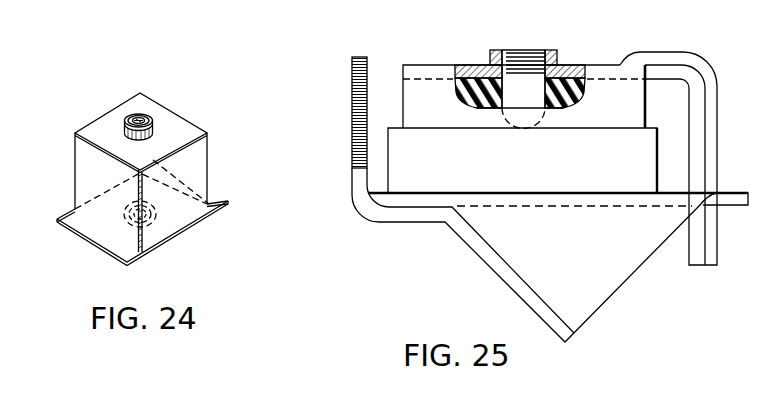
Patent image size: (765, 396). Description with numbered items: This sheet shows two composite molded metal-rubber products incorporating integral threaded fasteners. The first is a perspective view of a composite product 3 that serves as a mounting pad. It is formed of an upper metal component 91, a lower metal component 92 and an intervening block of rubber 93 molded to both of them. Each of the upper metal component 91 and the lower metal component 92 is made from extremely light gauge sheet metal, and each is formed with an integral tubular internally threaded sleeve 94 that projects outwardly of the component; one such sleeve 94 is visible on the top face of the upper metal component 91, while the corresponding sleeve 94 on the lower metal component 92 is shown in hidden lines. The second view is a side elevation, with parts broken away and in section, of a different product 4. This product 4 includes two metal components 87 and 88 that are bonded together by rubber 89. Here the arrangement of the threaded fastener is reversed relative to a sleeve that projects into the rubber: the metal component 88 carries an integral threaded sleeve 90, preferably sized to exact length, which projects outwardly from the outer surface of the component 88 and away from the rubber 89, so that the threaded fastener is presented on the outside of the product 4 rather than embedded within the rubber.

In FIG. 24, the composite product 3 is at (132, 169).
In FIG. 24, the upper metal component 91 is at (98, 128).
In FIG. 24, the block of rubber 93 is at (87, 173).
In FIG. 24, the lower metal component 92 is at (95, 232).
In FIG. 24, the integral tubular internally threaded sleeve 94 is at (152, 130).
In FIG. 25, the product 4 is at (445, 232).
In FIG. 25, the metal component 87 is at (352, 117).
In FIG. 25, the metal component 88 is at (466, 66).
In FIG. 25, the rubber 89 is at (480, 98).
In FIG. 25, the integral threaded sleeve 90 is at (557, 62).